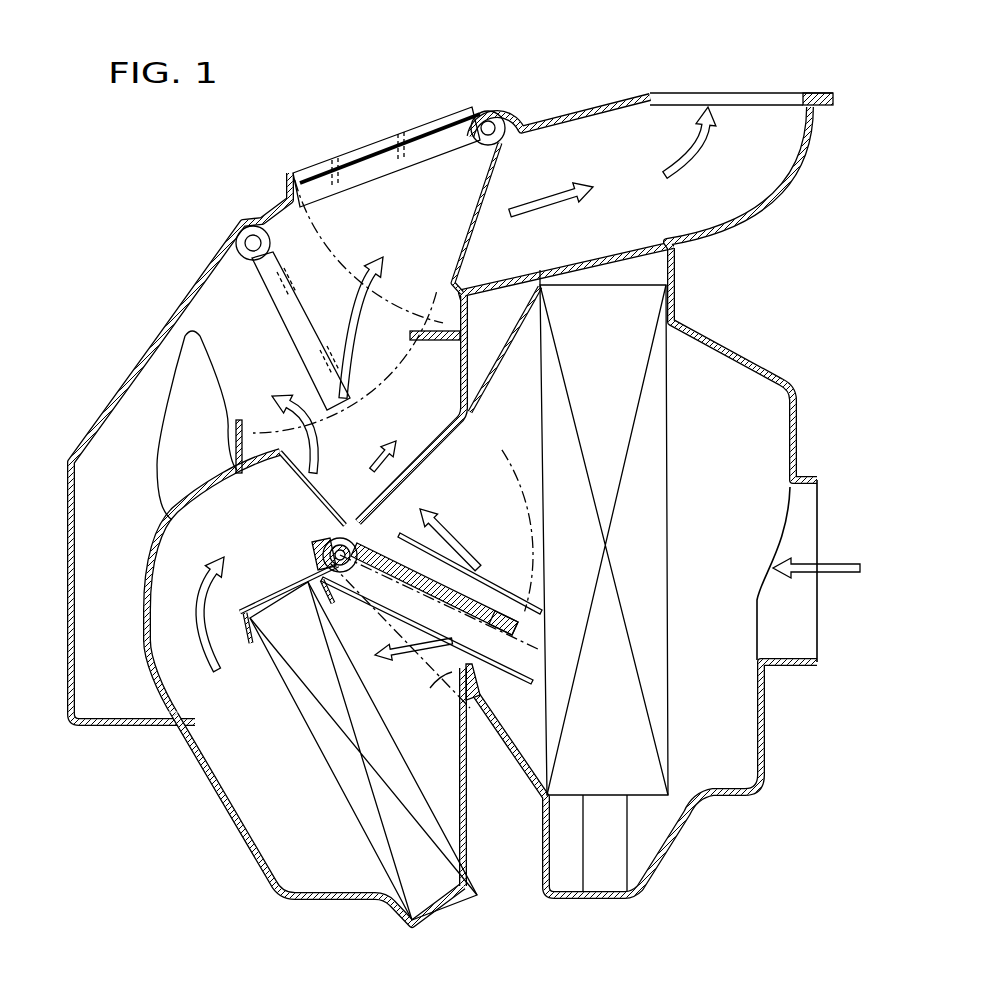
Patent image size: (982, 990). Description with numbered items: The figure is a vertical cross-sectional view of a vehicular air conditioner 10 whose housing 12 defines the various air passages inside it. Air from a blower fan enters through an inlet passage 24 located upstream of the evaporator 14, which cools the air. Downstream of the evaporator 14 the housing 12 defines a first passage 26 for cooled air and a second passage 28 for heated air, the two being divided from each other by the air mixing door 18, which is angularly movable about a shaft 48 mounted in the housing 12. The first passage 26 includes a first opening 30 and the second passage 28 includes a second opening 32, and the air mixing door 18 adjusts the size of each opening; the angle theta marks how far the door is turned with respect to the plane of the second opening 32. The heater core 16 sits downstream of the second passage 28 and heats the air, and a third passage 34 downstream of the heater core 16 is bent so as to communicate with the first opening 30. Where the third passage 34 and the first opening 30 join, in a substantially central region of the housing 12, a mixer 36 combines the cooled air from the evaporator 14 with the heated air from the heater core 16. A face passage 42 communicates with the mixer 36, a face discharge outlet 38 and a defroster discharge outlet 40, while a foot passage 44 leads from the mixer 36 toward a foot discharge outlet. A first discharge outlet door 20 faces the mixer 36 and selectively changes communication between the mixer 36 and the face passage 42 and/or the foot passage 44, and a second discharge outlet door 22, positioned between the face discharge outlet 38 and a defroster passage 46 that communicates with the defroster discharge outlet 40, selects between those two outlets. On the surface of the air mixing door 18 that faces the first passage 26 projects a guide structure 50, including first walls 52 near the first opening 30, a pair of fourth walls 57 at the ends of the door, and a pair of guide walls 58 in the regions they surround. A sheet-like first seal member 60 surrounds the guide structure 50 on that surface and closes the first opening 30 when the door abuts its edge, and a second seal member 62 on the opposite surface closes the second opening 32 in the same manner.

The vehicular air conditioner 10 is at (123, 174).
The housing 12 is at (735, 338).
The evaporator 14 is at (652, 506).
The heater core 16 is at (363, 777).
The air mixing door 18 is at (400, 617).
The first discharge outlet door 20 is at (290, 310).
The second discharge outlet door 22 is at (417, 157).
The inlet passage 24 is at (800, 520).
The first passage 26 is at (480, 452).
The second passage 28 is at (447, 793).
The first opening 30 is at (452, 443).
The second opening 32 is at (480, 668).
The third passage 34 is at (263, 807).
The mixer 36 is at (313, 423).
The face discharge outlet 38 is at (461, 109).
The defroster discharge outlet 40 is at (776, 95).
The face passage 42 is at (370, 203).
The foot passage 44 is at (107, 637).
The defroster passage 46 is at (765, 170).
The shaft 48 is at (494, 112).
The guide structure 50 is at (430, 578).
The first walls 52 is at (392, 527).
The fourth walls 57 is at (412, 548).
The guide walls 58 is at (458, 598).
The first seal member 60 is at (523, 627).
The second seal member 62 is at (535, 675).